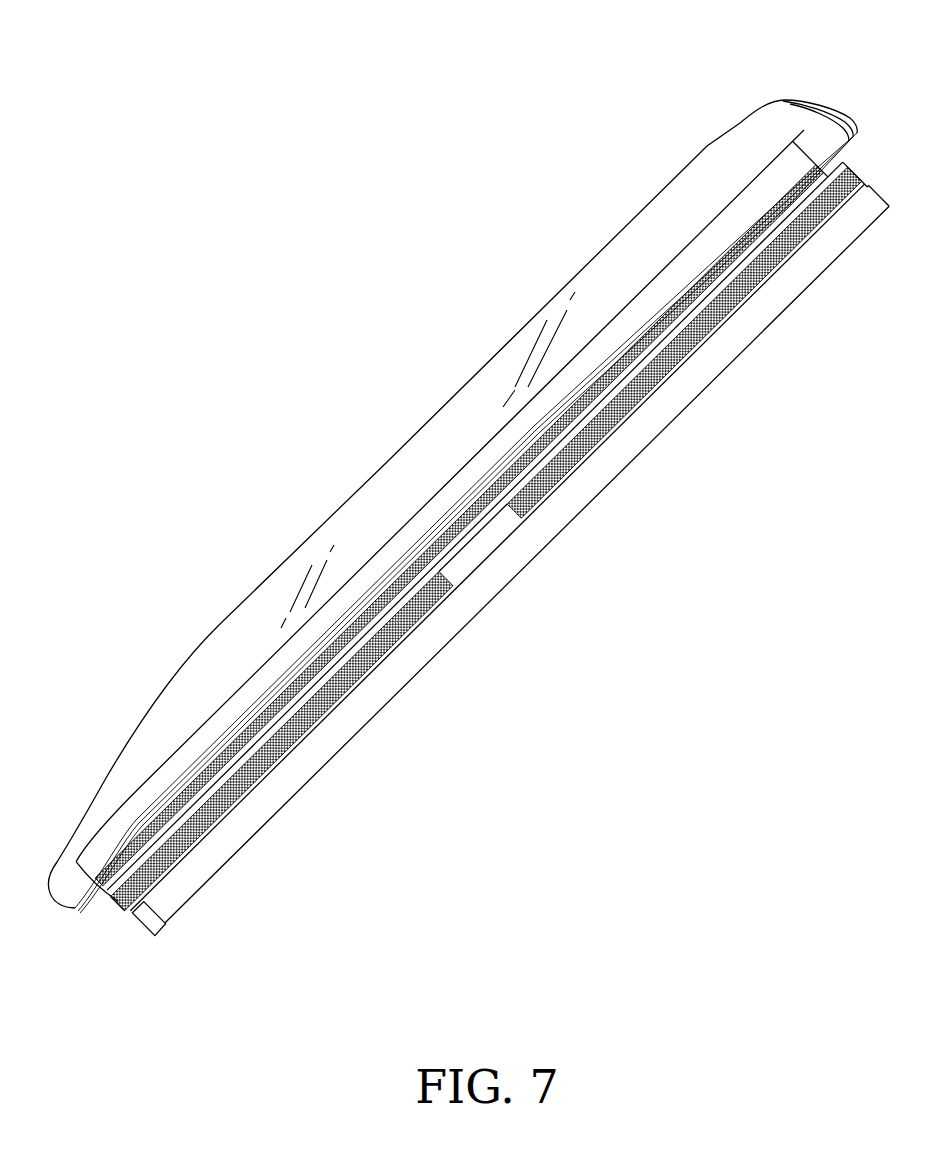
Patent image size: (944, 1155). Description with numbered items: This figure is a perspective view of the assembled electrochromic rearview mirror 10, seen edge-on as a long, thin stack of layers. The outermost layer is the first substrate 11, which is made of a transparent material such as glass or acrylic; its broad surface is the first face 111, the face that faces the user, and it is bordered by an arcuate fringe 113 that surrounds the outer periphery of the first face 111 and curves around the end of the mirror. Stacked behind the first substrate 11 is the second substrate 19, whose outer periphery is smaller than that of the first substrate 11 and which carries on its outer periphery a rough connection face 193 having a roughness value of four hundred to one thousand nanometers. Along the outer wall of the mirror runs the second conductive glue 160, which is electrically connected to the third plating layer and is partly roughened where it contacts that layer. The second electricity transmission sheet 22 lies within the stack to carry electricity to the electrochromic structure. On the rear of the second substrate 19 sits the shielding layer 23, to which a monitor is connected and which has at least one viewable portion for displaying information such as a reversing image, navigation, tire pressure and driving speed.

The electrochromic rearview mirror 10 is at (453, 464).
The first substrate 11 is at (376, 447).
The first face 111 is at (266, 613).
The arcuate fringe 113 is at (800, 108).
The second substrate 19 is at (108, 911).
The second electricity transmission sheet 22 is at (492, 572).
The shielding layer 23 is at (679, 433).
The second conductive glue 160 is at (377, 665).
The rough connection face 193 is at (581, 478).